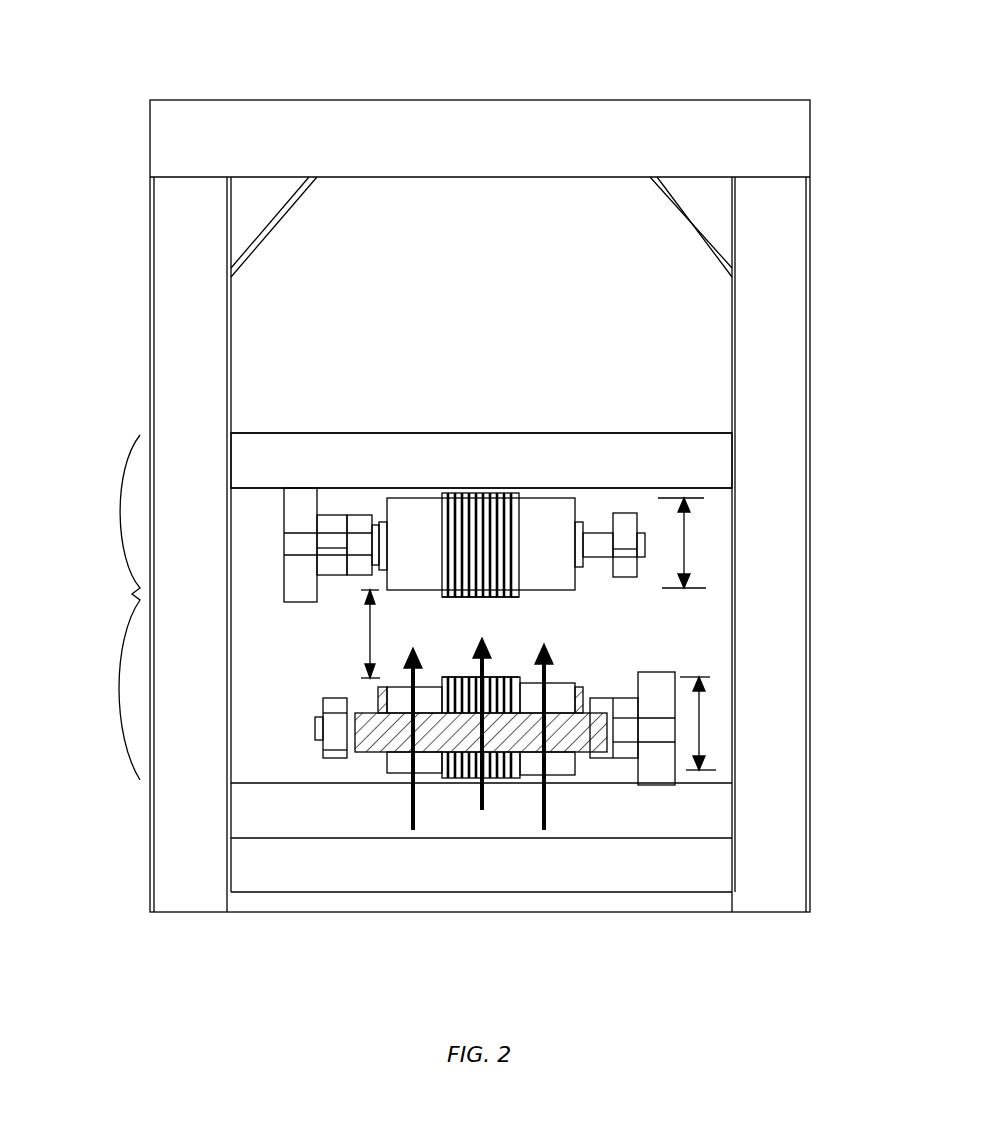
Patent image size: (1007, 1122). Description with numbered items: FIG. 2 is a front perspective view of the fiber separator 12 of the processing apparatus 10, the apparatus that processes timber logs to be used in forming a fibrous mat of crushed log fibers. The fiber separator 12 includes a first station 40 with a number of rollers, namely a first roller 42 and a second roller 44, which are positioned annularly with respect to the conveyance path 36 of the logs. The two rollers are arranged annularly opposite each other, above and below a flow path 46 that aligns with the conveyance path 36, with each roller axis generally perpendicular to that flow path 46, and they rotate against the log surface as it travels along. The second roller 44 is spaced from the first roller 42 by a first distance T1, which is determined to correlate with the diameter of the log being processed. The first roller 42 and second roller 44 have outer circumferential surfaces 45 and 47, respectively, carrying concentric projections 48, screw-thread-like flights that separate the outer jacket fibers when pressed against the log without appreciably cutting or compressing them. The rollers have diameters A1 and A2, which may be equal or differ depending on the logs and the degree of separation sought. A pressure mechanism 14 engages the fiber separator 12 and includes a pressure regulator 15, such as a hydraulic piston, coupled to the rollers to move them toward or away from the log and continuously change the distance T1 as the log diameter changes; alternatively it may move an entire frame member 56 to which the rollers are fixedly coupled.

The processing apparatus 10 is at (134, 76).
The fiber separator 12 is at (134, 318).
The pressure mechanism 14 is at (242, 415).
The pressure regulator 15 is at (298, 515).
The conveyance path 36 is at (420, 805).
The first station 40 is at (104, 572).
The first roller 42 is at (553, 508).
The second roller 44 is at (568, 692).
The outer circumferential surface 45 is at (567, 568).
The flow path 46 is at (484, 805).
The outer circumferential surface 47 is at (398, 757).
The concentric projections 48 is at (440, 583).
The frame member 56 is at (705, 460).
The diameter of first roller A1 is at (686, 538).
The diameter of second roller A2 is at (700, 722).
The first distance T1 is at (368, 632).